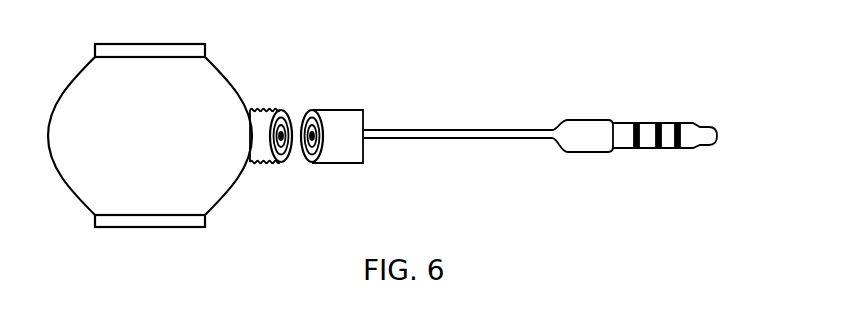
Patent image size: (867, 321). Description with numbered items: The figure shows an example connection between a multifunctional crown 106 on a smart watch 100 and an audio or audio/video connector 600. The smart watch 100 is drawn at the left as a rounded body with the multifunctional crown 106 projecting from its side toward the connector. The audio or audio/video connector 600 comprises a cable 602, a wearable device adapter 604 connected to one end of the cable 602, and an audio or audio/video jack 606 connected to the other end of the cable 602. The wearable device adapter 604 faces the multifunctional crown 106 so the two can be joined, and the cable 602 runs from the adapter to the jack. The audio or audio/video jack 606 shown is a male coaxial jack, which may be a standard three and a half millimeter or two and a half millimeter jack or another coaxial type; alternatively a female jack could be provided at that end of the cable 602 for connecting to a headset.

The smart watch 100 is at (226, 56).
The multifunctional crown 106 is at (262, 108).
The audio or audio/video connector 600 is at (509, 141).
The cable 602 is at (446, 140).
The wearable device adapter 604 is at (340, 164).
The audio or audio/video jack 606 is at (593, 120).